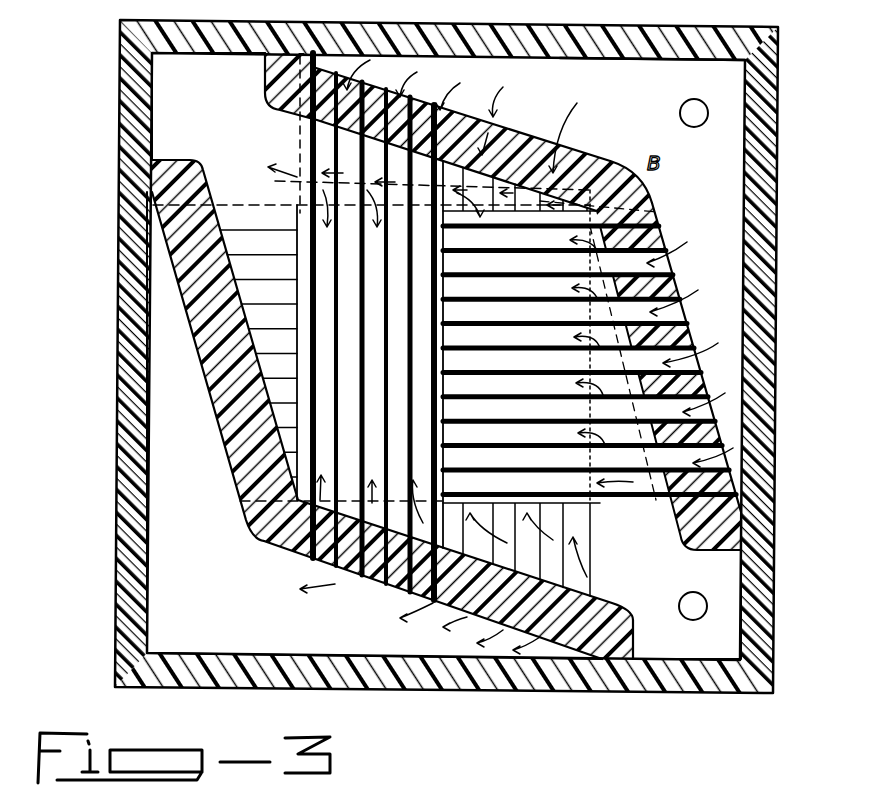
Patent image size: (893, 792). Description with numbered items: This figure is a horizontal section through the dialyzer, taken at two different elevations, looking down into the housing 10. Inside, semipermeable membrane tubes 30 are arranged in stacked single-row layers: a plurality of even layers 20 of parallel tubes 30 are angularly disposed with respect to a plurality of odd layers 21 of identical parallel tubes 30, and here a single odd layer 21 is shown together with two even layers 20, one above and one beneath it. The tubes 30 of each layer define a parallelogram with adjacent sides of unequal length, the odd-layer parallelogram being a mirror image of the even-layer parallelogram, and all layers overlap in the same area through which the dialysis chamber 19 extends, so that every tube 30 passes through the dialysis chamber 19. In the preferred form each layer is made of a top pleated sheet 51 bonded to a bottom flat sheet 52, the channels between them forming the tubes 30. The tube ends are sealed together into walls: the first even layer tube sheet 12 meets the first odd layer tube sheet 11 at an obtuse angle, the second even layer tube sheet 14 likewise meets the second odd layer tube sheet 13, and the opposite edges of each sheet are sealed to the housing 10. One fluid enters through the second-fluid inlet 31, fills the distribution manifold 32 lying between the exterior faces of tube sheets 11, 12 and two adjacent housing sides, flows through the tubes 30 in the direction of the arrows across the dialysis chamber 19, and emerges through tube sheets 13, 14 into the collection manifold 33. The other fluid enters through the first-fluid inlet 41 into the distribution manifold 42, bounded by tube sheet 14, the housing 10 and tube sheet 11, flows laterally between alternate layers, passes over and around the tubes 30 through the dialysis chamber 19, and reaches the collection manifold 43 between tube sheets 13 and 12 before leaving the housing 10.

The housing 10 is at (788, 56).
The first odd layer tube sheet 11 is at (694, 332).
The first even layer tube sheet 12 is at (503, 148).
The second odd layer tube sheet 13 is at (215, 187).
The second even layer tube sheet 14 is at (373, 566).
The dialysis chamber 19 is at (497, 306).
The even layers of parallel tubes 20 is at (605, 555).
The odd layers of parallel tubes 21 is at (650, 505).
The semipermeable membrane tubes 30 is at (340, 347).
The second-fluid inlet 31 is at (700, 112).
The second-fluid distribution manifold 32 is at (676, 76).
The second-fluid collection manifold 33 is at (217, 635).
The first-fluid inlet 41 is at (705, 613).
The first-fluid distribution manifold 42 is at (722, 576).
The first-fluid collection manifold 43 is at (232, 121).
The top pleated sheet 51 is at (277, 212).
The bottom flat sheet 52 is at (300, 133).